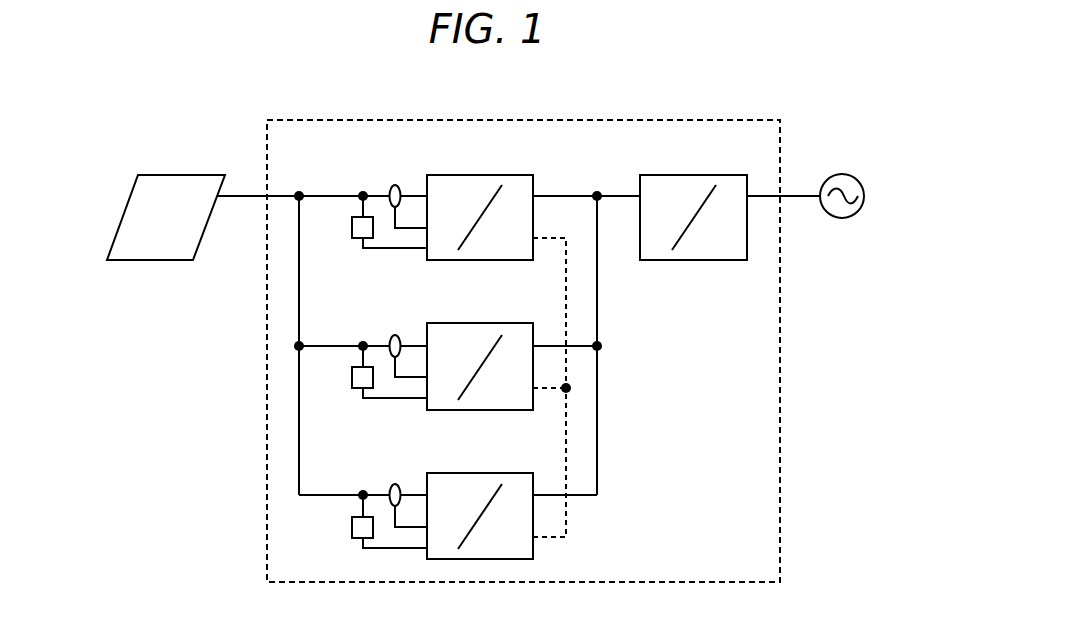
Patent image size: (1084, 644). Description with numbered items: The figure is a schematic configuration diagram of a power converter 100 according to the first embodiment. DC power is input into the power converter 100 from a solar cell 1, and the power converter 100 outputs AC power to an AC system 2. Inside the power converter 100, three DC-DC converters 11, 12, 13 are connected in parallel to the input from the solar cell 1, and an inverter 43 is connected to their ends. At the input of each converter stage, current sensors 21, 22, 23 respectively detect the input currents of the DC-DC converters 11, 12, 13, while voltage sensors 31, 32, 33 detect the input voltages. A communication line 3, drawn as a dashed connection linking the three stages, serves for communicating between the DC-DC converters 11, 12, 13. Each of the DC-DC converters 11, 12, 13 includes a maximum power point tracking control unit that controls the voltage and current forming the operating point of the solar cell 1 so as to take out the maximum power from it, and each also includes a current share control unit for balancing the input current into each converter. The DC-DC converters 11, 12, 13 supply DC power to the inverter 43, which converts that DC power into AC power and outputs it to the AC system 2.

The solar cell 1 is at (170, 175).
The AC system 2 is at (845, 173).
The communication line 3 is at (566, 520).
The DC-DC converter 11 is at (476, 175).
The DC-DC converter 12 is at (476, 323).
The DC-DC converter 13 is at (476, 473).
The current sensor 21 is at (395, 184).
The current sensor 22 is at (395, 334).
The current sensor 23 is at (395, 483).
The voltage sensor 31 is at (352, 228).
The voltage sensor 32 is at (352, 378).
The voltage sensor 33 is at (352, 528).
The inverter 43 is at (690, 175).
The power converter 100 is at (697, 120).